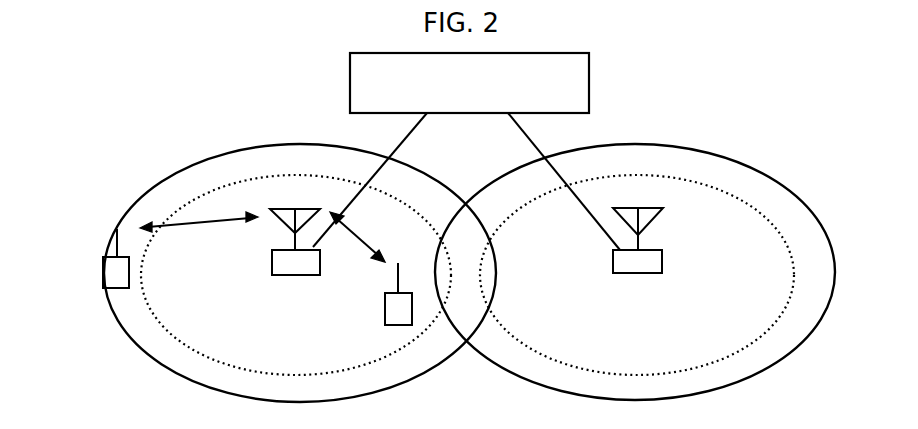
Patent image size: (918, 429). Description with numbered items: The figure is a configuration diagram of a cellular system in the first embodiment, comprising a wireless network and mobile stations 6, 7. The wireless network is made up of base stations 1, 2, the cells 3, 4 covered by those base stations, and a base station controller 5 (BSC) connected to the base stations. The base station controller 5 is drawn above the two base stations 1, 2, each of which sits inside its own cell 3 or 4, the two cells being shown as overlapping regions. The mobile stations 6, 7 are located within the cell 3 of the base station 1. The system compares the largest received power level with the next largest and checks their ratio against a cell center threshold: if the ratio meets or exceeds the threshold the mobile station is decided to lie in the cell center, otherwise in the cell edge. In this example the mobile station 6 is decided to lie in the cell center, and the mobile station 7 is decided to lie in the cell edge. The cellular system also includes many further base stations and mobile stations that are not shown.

The base station 1 is at (295, 275).
The base station 2 is at (638, 273).
The cell 3 is at (138, 355).
The cell 4 is at (500, 367).
The base station controller 5 is at (350, 96).
The mobile station 6 is at (385, 318).
The mobile station 7 is at (103, 250).